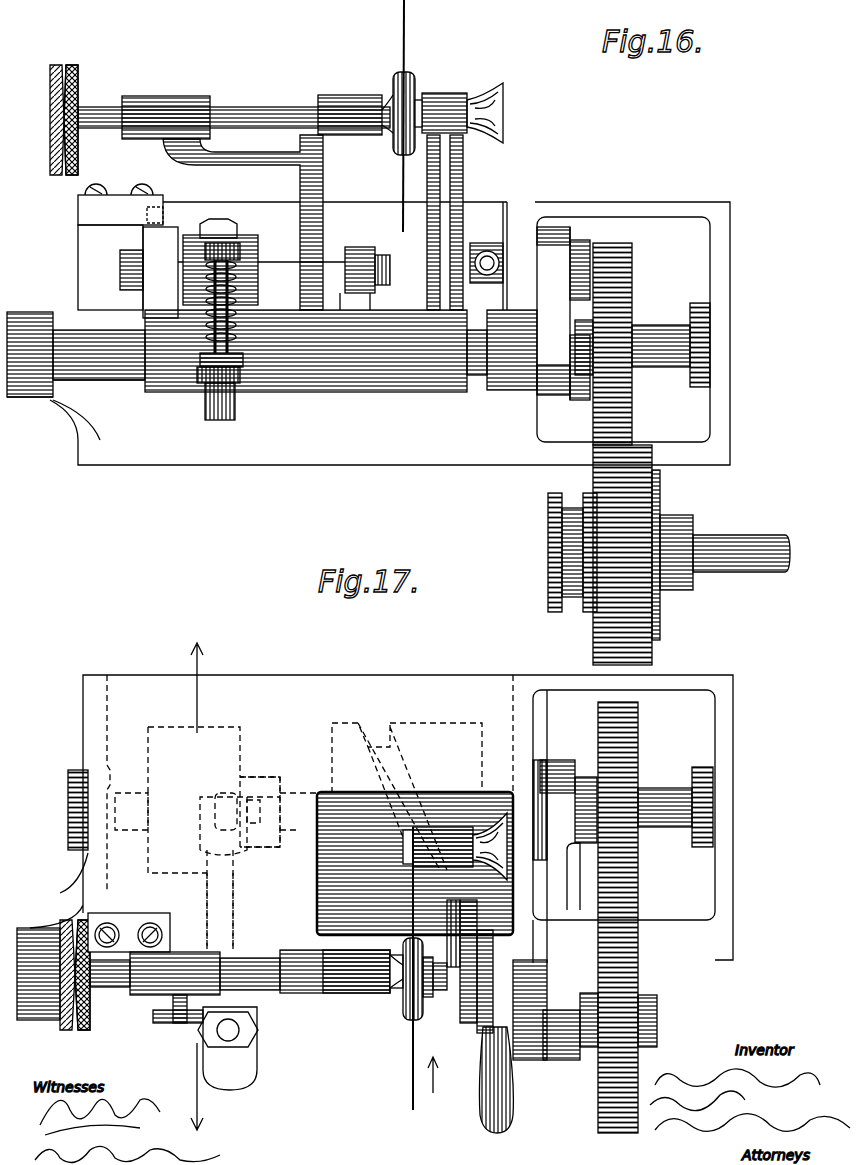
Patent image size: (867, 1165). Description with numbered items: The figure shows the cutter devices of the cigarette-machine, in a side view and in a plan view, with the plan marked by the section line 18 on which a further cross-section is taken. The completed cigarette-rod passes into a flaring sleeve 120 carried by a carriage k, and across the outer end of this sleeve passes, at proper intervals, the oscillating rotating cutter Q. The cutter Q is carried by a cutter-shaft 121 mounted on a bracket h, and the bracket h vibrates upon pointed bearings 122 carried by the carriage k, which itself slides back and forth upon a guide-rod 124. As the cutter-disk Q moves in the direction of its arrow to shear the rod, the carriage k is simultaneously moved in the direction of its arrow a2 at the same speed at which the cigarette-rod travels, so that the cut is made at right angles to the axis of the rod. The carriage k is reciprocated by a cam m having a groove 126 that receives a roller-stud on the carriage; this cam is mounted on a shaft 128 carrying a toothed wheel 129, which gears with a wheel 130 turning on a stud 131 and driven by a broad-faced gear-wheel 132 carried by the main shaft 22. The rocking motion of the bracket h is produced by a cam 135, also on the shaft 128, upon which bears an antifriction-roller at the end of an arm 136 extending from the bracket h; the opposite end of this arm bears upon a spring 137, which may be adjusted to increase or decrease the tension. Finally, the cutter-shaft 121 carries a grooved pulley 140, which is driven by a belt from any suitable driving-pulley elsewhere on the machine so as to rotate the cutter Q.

In FIG. 16, the grooved pulley 140 is at (55, 157).
In FIG. 17, the grooved pulley 140 is at (88, 1023).
In FIG. 16, the cutter-shaft 121 is at (267, 105).
In FIG. 17, the cutter-shaft 121 is at (302, 978).
In FIG. 16, the flaring sleeve 120 is at (502, 84).
In FIG. 17, the flaring sleeve 120 is at (488, 830).
In FIG. 16, the oscillating rotating cutter Q is at (400, 35).
In FIG. 17, the oscillating rotating cutter Q is at (410, 1073).
In FIG. 16, the bracket h is at (340, 180).
In FIG. 17, the bracket h is at (368, 988).
In FIG. 16, the pointed bearings 122 is at (175, 262).
In FIG. 16, the spring 137 is at (240, 332).
In FIG. 16, the arrow a2 is at (388, 345).
In FIG. 16, the guide-rod 124 is at (133, 380).
In FIG. 16, the carriage k is at (348, 388).
In FIG. 17, the carriage k is at (187, 1020).
In FIG. 16, the wheel 130 is at (634, 279).
In FIG. 17, the wheel 130 is at (612, 1006).
In FIG. 16, the shaft 128 is at (673, 363).
In FIG. 17, the shaft 128 is at (302, 826).
In FIG. 16, the broad-faced gear-wheel 132 is at (655, 650).
In FIG. 16, the main shaft 22 is at (765, 576).
In FIG. 17, the section line 18 18 is at (194, 882).
In FIG. 17, the cam 135 is at (148, 727).
In FIG. 17, the cam m is at (330, 727).
In FIG. 17, the groove 126 is at (367, 740).
In FIG. 17, the arm 136 is at (248, 898).
In FIG. 17, the toothed wheel 129 is at (638, 751).
In FIG. 17, the stud 131 is at (592, 1049).